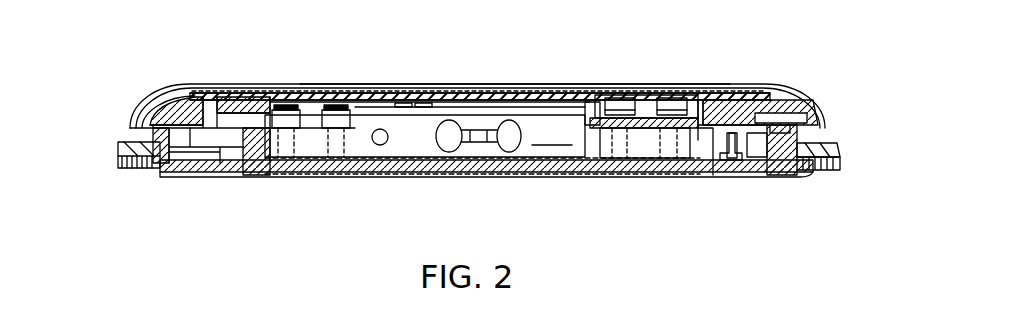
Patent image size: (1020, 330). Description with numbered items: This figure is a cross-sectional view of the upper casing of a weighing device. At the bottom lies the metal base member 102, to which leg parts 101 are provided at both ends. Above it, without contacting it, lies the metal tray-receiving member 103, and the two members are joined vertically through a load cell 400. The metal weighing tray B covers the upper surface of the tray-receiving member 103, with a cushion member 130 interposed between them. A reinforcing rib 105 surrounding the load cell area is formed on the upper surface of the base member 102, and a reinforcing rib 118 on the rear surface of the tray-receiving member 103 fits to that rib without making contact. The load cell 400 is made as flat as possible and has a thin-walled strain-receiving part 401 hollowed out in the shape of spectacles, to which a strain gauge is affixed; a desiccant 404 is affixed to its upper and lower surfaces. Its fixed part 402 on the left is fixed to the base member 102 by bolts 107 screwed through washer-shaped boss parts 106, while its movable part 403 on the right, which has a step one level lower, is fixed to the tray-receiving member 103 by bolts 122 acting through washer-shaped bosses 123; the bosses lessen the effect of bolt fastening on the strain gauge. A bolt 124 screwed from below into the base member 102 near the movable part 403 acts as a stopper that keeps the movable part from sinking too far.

The leg parts 101 is at (135, 170).
The base member 102 is at (532, 172).
The tray-receiving member 103 is at (572, 100).
The reinforcing rib 105 is at (247, 125).
The boss parts 106 is at (345, 128).
The bolts 107 is at (330, 84).
The reinforcing rib 118 is at (208, 118).
The bolts 122 is at (662, 108).
The bosses 123 is at (658, 133).
The bolt 124 is at (723, 162).
The cushion member 130 is at (447, 93).
The load cell 400 is at (432, 129).
The strain-receiving part 401 is at (507, 118).
The fixed part 402 is at (352, 134).
The movable part 403 is at (643, 160).
The desiccant 404 is at (395, 103).
The weighing tray B is at (513, 83).